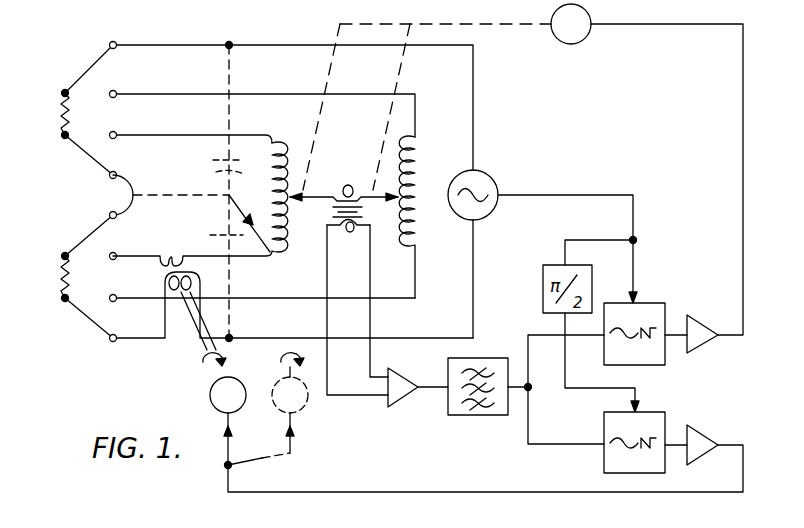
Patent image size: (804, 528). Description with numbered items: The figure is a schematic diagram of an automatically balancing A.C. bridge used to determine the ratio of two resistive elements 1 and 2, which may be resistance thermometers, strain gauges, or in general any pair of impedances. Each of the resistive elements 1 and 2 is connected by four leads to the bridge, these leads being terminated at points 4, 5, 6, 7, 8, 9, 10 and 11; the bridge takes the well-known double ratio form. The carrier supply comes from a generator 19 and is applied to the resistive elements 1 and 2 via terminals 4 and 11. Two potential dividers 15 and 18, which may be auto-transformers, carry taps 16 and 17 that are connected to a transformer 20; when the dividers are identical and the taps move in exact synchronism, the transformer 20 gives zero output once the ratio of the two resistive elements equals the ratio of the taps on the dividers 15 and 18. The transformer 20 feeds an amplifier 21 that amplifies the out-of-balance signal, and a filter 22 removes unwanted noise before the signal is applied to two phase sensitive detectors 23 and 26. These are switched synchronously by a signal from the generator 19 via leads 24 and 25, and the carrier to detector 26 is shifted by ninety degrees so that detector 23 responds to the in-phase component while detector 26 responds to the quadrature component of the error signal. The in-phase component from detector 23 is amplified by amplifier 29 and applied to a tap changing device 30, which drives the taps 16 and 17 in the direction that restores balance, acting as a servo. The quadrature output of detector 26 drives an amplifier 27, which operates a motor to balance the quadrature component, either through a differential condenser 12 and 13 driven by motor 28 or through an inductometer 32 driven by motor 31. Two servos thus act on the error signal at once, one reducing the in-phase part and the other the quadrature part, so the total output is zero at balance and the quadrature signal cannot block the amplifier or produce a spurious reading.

The resistive element 1 is at (58, 111).
The resistive element 2 is at (59, 273).
The lead termination point 4 is at (115, 341).
The lead termination point 5 is at (114, 302).
The lead termination point 6 is at (114, 260).
The lead termination point 7 is at (110, 212).
The lead termination point 8 is at (116, 172).
The lead termination point 9 is at (115, 131).
The lead termination point 10 is at (114, 90).
The lead termination point 11 is at (115, 42).
The differential condenser 12 is at (221, 231).
The differential condenser 13 is at (216, 176).
The potential divider 15 is at (287, 143).
The tap 16 is at (292, 199).
The tap 17 is at (396, 199).
The potential divider 18 is at (424, 150).
The generator 19 is at (491, 178).
The transformer 20 is at (349, 232).
The amplifier 21 is at (398, 381).
The filter 22 is at (490, 360).
The phase sensitive detector 23 is at (645, 350).
The lead 24 is at (637, 274).
The lead 25 is at (594, 393).
The phase sensitive detector 26 is at (606, 458).
The amplifier 27 is at (696, 452).
The motor 28 is at (209, 396).
The amplifier 29 is at (699, 327).
The tap changing device 30 is at (582, 34).
The motor 31 is at (300, 409).
The inductometer 32 is at (196, 278).